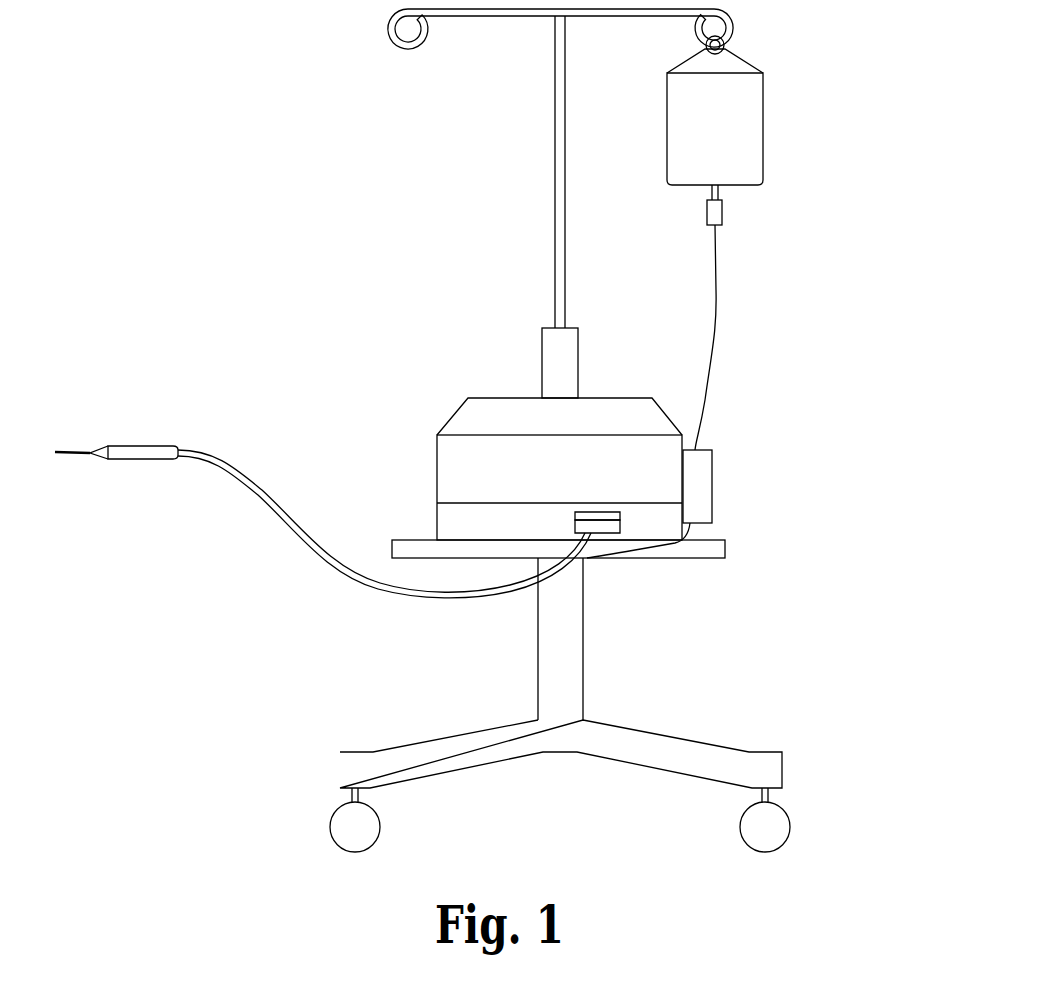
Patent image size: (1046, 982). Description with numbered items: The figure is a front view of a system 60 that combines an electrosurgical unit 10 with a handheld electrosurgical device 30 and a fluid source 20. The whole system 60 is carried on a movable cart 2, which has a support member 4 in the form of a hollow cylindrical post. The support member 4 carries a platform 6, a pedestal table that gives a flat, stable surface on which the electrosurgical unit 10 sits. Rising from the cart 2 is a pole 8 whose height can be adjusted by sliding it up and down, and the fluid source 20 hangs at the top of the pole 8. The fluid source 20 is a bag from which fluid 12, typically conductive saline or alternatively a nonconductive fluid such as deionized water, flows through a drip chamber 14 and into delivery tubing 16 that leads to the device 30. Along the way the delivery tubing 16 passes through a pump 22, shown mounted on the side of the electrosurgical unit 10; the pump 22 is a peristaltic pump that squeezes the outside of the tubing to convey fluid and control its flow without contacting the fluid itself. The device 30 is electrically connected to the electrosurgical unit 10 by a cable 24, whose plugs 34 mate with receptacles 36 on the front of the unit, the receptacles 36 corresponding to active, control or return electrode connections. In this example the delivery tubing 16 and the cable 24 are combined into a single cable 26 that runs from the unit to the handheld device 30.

The movable cart 2 is at (622, 647).
The support member 4 is at (567, 688).
The platform 6 is at (725, 548).
The pole 8 is at (555, 143).
The electrosurgical unit 10 is at (444, 413).
The fluid 12 is at (750, 147).
The drip chamber 14 is at (723, 210).
The delivery tubing 16 is at (717, 317).
The fluid source 20 is at (770, 108).
The pump 22 is at (712, 485).
The cable 24 is at (572, 538).
The single cable 26 is at (413, 593).
The handheld electrosurgical device 30 is at (146, 472).
The plugs 34 is at (596, 526).
The receptacles 36 is at (612, 514).
The system 60 is at (886, 361).